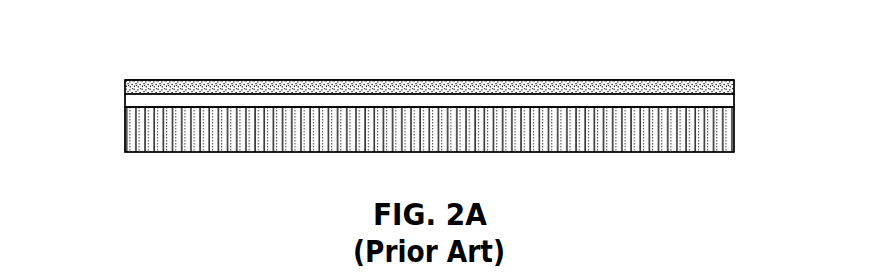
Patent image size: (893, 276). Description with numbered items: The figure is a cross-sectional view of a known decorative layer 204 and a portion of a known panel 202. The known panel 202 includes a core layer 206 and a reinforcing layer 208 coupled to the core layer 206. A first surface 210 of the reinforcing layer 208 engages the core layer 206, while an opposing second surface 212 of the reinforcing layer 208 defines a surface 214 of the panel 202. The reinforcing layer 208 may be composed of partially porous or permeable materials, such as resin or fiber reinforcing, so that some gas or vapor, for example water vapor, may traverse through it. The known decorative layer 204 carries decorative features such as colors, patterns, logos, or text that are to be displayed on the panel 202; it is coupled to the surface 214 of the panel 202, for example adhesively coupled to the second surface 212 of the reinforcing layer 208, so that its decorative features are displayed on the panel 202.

The known panel 202 is at (745, 105).
The known decorative layer 204 is at (712, 80).
The core layer 206 is at (125, 135).
The reinforcing layer 208 is at (125, 98).
The first surface 210 is at (575, 108).
The second surface 212 is at (598, 93).
The surface 214 is at (202, 80).